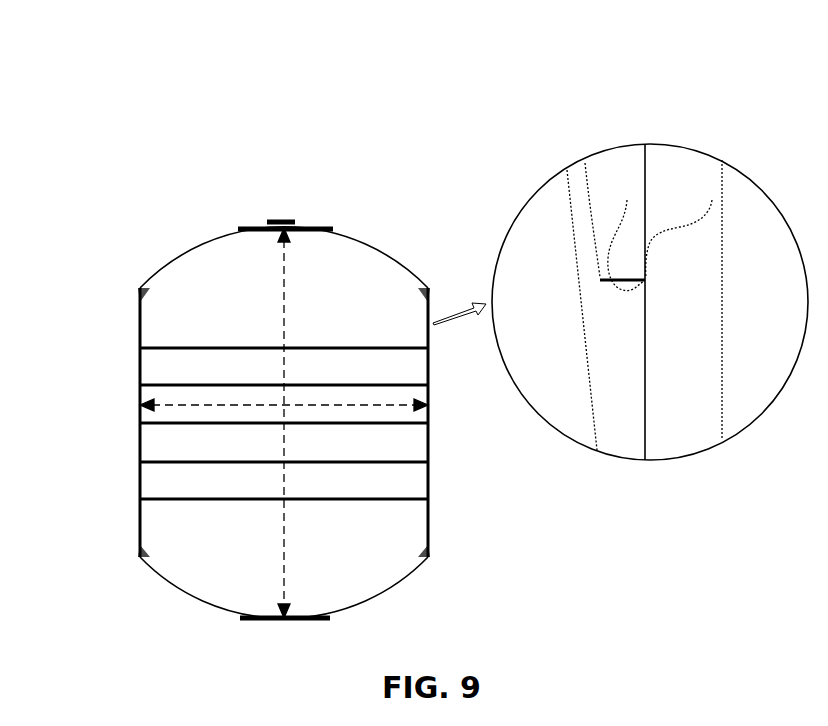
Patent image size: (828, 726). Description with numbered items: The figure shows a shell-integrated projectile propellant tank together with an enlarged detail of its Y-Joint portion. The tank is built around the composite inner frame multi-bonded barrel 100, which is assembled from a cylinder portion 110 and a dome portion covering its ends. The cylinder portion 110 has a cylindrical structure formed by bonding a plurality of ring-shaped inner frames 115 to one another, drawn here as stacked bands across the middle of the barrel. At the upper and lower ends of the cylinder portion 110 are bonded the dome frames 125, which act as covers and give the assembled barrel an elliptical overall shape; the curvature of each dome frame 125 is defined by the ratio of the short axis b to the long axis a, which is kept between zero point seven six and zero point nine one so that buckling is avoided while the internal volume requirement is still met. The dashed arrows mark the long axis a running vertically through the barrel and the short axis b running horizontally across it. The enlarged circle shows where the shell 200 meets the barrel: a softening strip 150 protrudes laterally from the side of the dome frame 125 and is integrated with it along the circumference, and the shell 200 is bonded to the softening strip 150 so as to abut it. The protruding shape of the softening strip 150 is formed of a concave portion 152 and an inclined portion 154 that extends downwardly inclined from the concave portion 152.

The composite inner frame multi-bonded barrel 100 is at (376, 232).
The cylinder portion 110 is at (270, 220).
The ring-shaped inner frames 115 is at (162, 440).
The dome frame 125 is at (163, 323).
The softening strip 150 is at (709, 55).
The concave portion 152 is at (627, 200).
The inclined portion 154 is at (712, 200).
The shell 200 is at (140, 556).
The long axis a is at (283, 298).
The short axis b is at (200, 405).